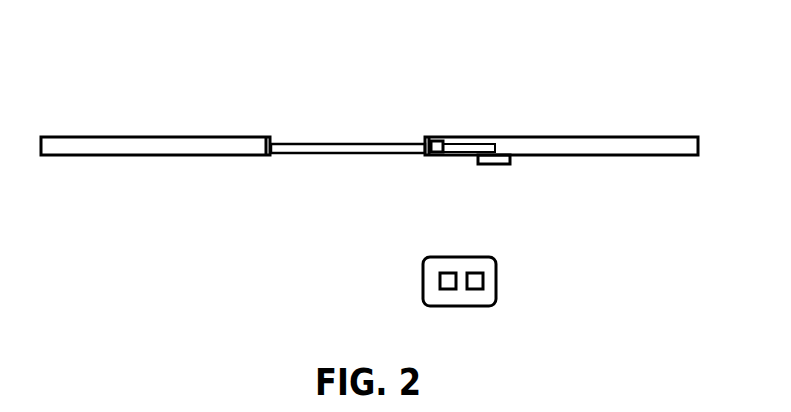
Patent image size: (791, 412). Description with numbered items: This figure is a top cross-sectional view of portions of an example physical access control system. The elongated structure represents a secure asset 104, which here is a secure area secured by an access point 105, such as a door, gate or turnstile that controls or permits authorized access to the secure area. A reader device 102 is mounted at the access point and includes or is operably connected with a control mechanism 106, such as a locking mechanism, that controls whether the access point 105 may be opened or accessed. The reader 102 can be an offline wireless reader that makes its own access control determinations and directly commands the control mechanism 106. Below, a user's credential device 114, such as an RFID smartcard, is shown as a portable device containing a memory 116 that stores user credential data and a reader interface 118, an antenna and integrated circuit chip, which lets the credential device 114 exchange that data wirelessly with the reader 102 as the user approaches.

The secure asset 104 is at (334, 32).
The access point 105 is at (352, 155).
The control mechanism 106 is at (435, 137).
The reader device 102 is at (500, 164).
The credential device 114 is at (422, 282).
The memory 116 is at (456, 289).
The reader interface 118 is at (483, 273).